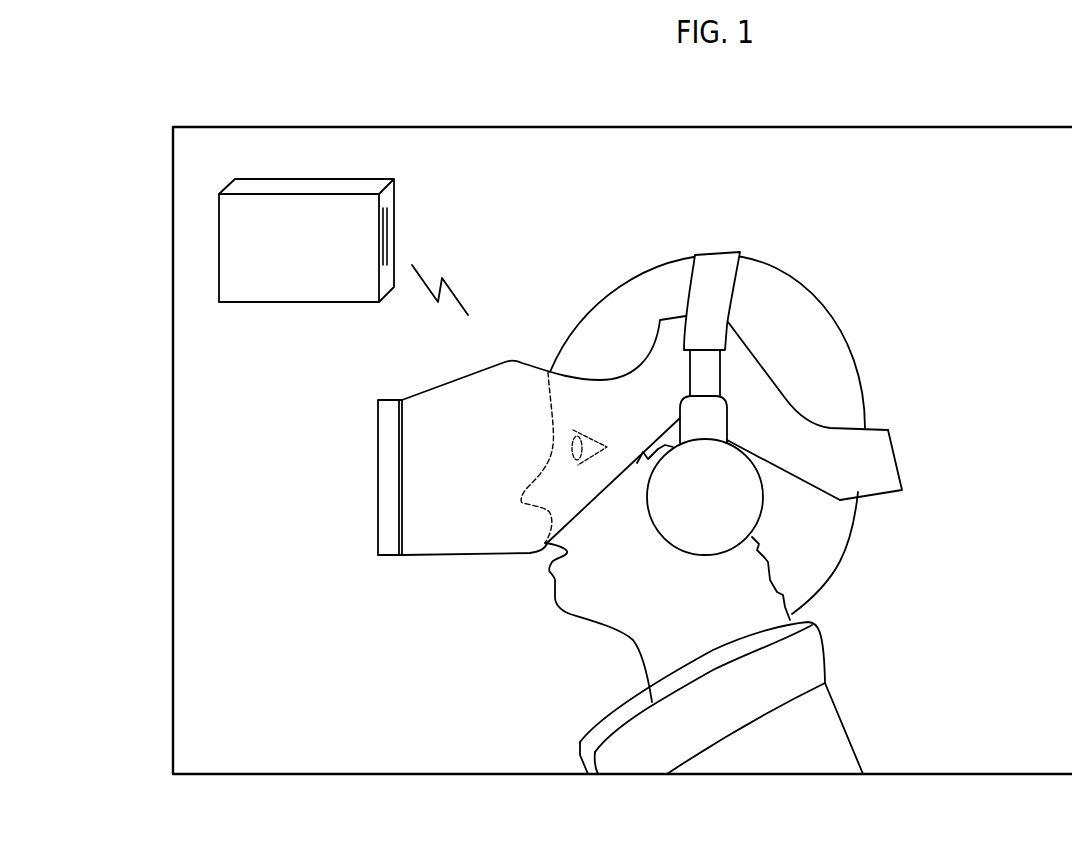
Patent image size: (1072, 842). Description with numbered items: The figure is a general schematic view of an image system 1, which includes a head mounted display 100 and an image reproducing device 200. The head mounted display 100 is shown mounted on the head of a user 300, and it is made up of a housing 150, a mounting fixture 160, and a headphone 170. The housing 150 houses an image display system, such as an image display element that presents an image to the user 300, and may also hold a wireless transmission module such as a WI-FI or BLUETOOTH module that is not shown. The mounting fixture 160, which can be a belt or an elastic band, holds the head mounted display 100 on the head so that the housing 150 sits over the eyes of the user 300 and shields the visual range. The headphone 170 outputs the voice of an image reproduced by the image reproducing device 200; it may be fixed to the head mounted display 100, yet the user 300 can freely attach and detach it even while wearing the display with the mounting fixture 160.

The image system 1 is at (681, 127).
The head mounted display 100 is at (666, 404).
The housing 150 is at (452, 557).
The mounting fixture 160 is at (897, 458).
The headphone 170 is at (712, 250).
The image reproducing device 200 is at (395, 200).
The user 300 is at (825, 310).